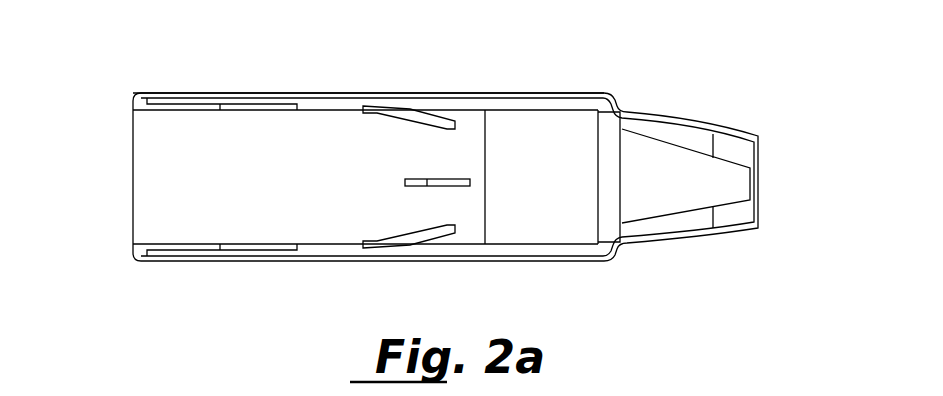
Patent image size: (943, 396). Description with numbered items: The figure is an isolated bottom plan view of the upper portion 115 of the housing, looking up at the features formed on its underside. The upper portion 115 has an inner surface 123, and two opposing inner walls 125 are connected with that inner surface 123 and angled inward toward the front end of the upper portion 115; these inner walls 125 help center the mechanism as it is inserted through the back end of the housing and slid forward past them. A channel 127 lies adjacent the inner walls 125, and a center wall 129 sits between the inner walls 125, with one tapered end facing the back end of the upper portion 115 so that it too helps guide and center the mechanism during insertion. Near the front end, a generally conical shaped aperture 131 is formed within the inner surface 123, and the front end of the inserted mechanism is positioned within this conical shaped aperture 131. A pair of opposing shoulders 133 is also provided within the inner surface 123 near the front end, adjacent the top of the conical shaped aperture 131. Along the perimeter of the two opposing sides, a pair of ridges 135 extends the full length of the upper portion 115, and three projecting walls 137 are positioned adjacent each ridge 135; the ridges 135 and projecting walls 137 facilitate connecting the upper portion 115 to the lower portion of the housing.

The upper portion 115 is at (593, 72).
The inner surface 123 is at (187, 155).
The inner walls 125 is at (440, 122).
The channel 127 is at (558, 230).
The center wall 129 is at (463, 187).
The generally conical shaped aperture 131 is at (677, 168).
The opposing shoulders 133 is at (750, 205).
The ridges 135 is at (167, 100).
The projecting walls 137 is at (372, 96).